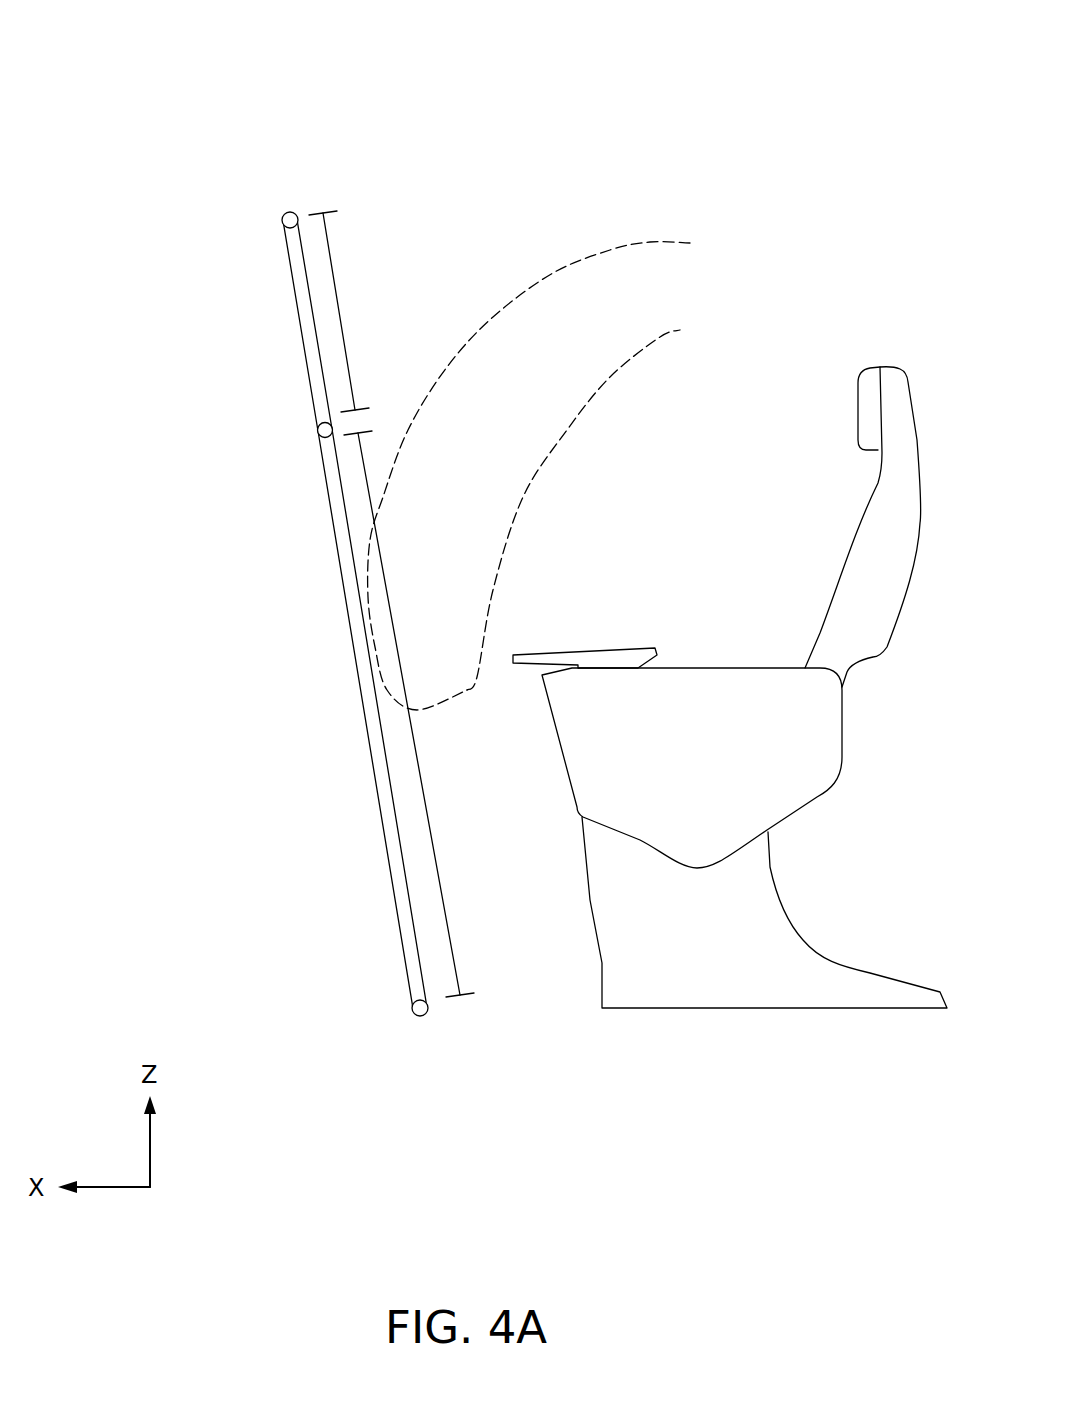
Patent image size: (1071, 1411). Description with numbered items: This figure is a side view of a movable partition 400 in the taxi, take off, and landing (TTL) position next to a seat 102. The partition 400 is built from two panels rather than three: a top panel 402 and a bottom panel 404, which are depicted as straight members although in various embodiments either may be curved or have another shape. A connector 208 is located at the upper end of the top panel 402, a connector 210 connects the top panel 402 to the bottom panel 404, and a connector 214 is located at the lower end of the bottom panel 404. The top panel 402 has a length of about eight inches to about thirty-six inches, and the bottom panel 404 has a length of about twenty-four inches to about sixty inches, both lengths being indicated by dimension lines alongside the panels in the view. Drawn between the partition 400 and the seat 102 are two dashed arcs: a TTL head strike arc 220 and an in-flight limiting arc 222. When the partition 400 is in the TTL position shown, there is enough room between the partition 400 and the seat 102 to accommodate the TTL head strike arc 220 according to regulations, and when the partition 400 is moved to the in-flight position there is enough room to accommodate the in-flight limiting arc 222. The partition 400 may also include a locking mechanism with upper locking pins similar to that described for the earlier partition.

The movable partition 400 is at (213, 108).
The connector 208 is at (283, 221).
The top panel 402 is at (303, 338).
The connector 210 is at (317, 430).
The bottom panel 404 is at (385, 838).
The connector 214 is at (415, 1008).
The TTL head strike arc 220 is at (612, 253).
The in-flight limiting arc 222 is at (690, 330).
The seat 102 is at (810, 728).